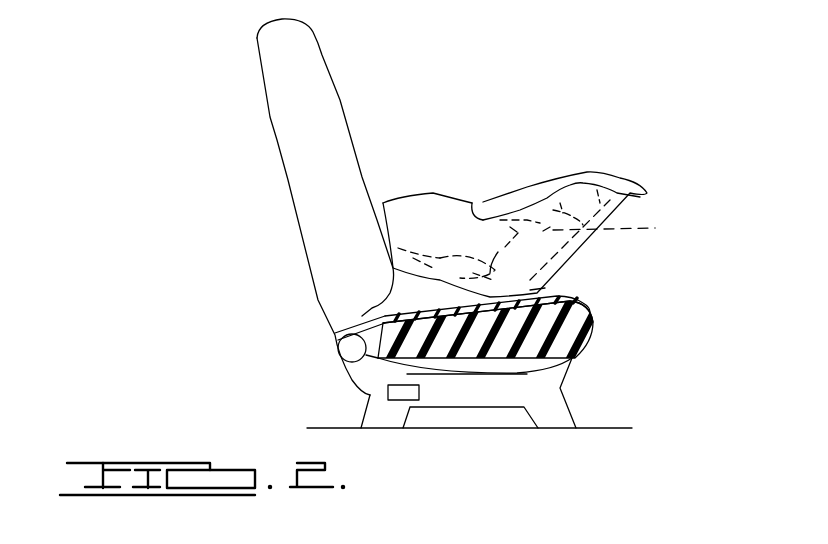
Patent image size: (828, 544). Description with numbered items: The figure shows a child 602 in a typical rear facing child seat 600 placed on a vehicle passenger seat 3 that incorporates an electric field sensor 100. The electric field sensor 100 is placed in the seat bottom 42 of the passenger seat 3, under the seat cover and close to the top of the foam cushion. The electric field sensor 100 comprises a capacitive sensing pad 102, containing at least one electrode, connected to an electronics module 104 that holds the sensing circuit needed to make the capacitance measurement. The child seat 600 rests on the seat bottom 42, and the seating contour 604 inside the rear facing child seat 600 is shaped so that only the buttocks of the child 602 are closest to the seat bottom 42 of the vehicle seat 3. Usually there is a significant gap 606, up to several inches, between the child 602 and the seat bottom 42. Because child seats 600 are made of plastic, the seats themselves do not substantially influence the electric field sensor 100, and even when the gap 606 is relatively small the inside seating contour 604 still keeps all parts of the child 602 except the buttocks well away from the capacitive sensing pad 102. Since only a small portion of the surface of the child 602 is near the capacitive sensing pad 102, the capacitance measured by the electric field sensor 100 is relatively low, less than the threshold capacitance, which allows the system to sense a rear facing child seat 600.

The passenger seat 3 is at (273, 137).
The electric field sensor 100 is at (372, 302).
The seat bottom 42 is at (595, 342).
The capacitive sensing pad 102 is at (585, 303).
The electronics module 104 is at (388, 391).
The rear facing child seat 600 is at (633, 186).
The child 602 is at (570, 183).
The seating contour 604 is at (655, 228).
The gap 606 is at (523, 291).